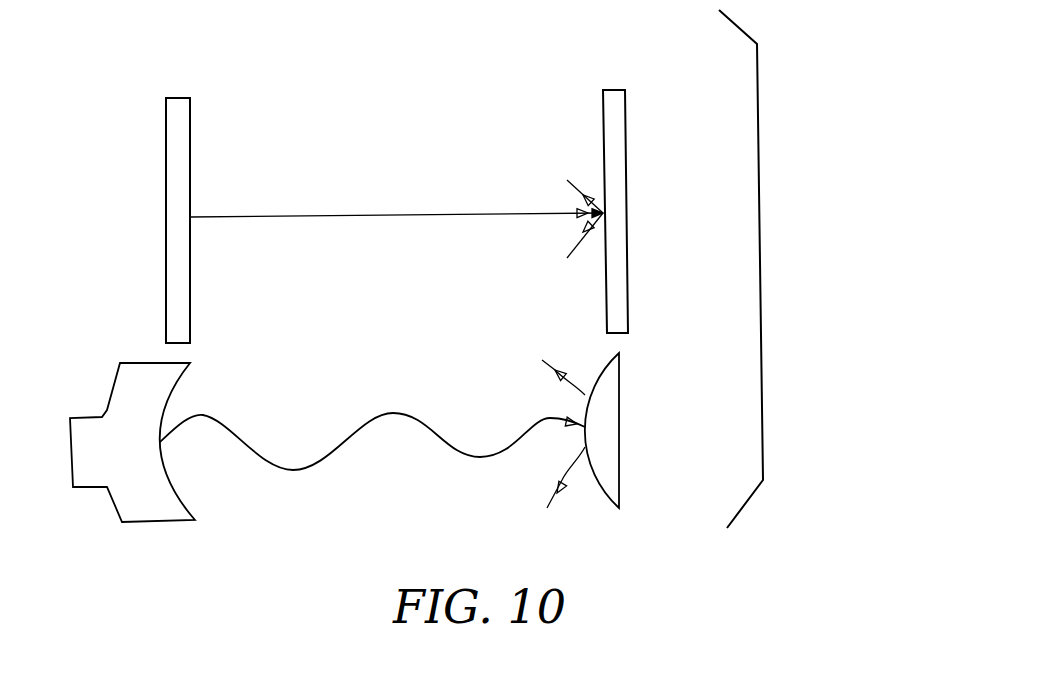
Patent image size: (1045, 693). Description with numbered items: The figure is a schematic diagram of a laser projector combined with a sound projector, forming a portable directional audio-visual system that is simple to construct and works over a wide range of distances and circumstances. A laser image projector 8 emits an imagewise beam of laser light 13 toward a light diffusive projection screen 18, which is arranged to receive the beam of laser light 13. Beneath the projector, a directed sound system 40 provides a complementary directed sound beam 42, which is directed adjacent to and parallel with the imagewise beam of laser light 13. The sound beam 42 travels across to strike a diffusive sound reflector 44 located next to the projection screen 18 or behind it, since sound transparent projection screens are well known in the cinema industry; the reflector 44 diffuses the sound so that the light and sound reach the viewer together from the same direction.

The laser image projector 8 is at (177, 98).
The imagewise beam of laser light 13 is at (378, 216).
The light diffusive projection screen 18 is at (613, 90).
The directed sound system 40 is at (78, 413).
The directed sound beam 42 is at (363, 430).
The diffusive sound reflector 44 is at (620, 432).